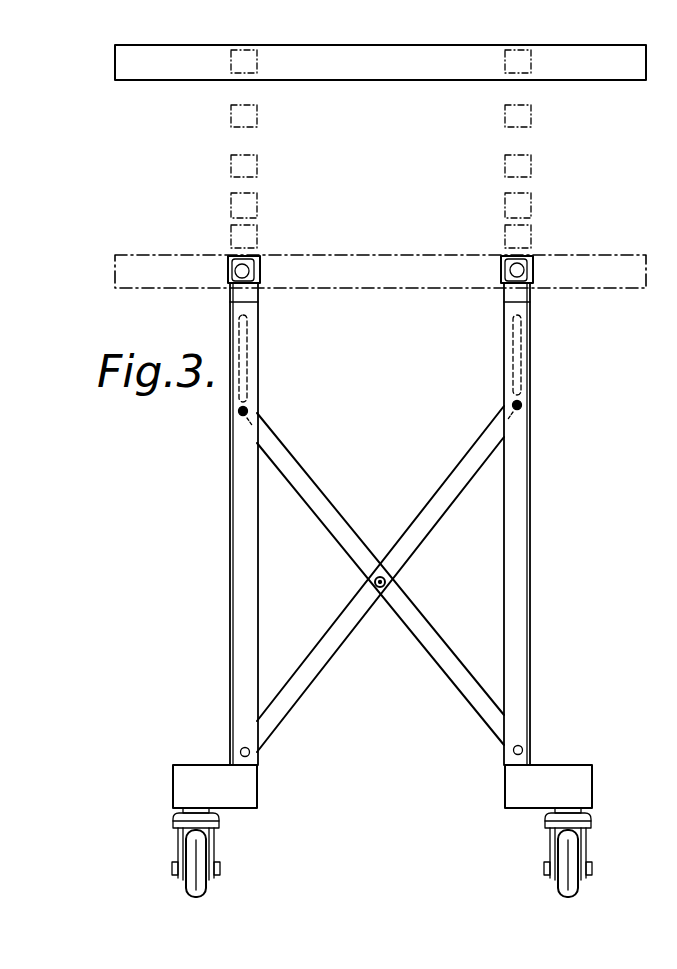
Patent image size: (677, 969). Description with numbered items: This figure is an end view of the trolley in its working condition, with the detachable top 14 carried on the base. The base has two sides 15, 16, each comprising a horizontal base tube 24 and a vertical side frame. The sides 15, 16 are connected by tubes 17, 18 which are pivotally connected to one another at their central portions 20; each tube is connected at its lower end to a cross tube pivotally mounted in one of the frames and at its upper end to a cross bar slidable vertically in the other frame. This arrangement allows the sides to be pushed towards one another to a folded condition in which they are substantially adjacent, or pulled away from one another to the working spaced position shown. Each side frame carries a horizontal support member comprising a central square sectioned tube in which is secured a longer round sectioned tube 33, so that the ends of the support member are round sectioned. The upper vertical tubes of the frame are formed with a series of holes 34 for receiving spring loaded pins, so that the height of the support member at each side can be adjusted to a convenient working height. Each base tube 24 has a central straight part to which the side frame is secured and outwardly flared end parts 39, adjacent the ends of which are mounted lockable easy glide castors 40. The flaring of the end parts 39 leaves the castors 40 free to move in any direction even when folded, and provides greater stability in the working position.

The detachable top 14 is at (448, 62).
The side 15 is at (240, 488).
The side 16 is at (507, 482).
The tube 17 is at (335, 505).
The tube 18 is at (300, 688).
The central portion 20 is at (390, 588).
The horizontal base tube 24 is at (560, 765).
The round sectioned tube 33 is at (497, 270).
The holes 34 is at (526, 260).
The outwardly flared end parts 39 is at (192, 765).
The lockable easy glide castors 40 is at (198, 853).